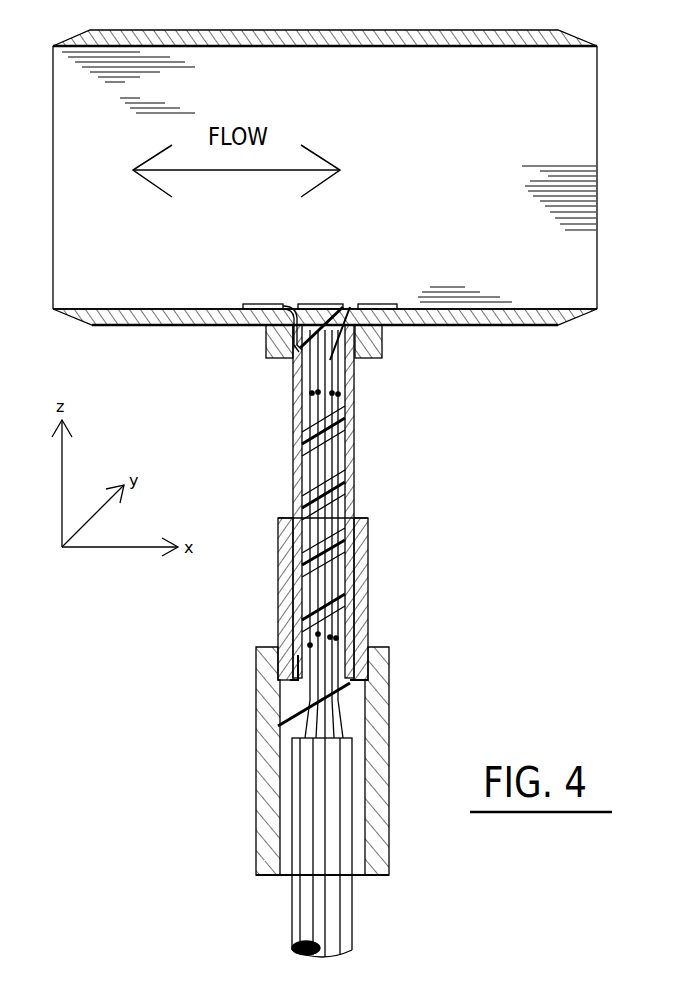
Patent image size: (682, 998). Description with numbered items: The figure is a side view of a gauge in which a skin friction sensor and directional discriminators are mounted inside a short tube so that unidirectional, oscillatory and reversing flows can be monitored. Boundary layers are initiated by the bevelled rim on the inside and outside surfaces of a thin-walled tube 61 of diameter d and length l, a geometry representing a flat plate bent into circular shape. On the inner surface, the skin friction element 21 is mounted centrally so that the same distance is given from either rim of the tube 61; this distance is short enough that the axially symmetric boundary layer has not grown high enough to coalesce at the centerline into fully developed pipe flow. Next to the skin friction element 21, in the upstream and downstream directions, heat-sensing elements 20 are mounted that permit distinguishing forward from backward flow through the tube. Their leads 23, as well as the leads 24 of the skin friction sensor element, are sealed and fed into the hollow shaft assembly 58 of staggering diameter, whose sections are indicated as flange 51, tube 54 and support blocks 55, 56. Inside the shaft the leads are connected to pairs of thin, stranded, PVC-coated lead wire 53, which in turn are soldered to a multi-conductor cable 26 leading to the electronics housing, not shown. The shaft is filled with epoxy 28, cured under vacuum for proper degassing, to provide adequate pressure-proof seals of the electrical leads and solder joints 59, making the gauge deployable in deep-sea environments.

The thin-walled tube 61 is at (300, 31).
The heat-sensing elements 20 is at (257, 303).
The skin friction element 21 is at (303, 304).
The leads of heat-sensing elements 23 is at (307, 368).
The leads of skin friction sensor element 24 is at (340, 392).
The solder joints 59 is at (316, 404).
The stranded PVC-coated lead wire 53 is at (305, 447).
The probe tube 54 is at (355, 458).
The mounting flange 51 is at (385, 353).
The support block 55 is at (369, 553).
The housing block 56 is at (390, 688).
The epoxy 28 is at (360, 740).
The multi-conductor cable 26 is at (350, 920).
The hollow shaft assembly 58 is at (452, 521).